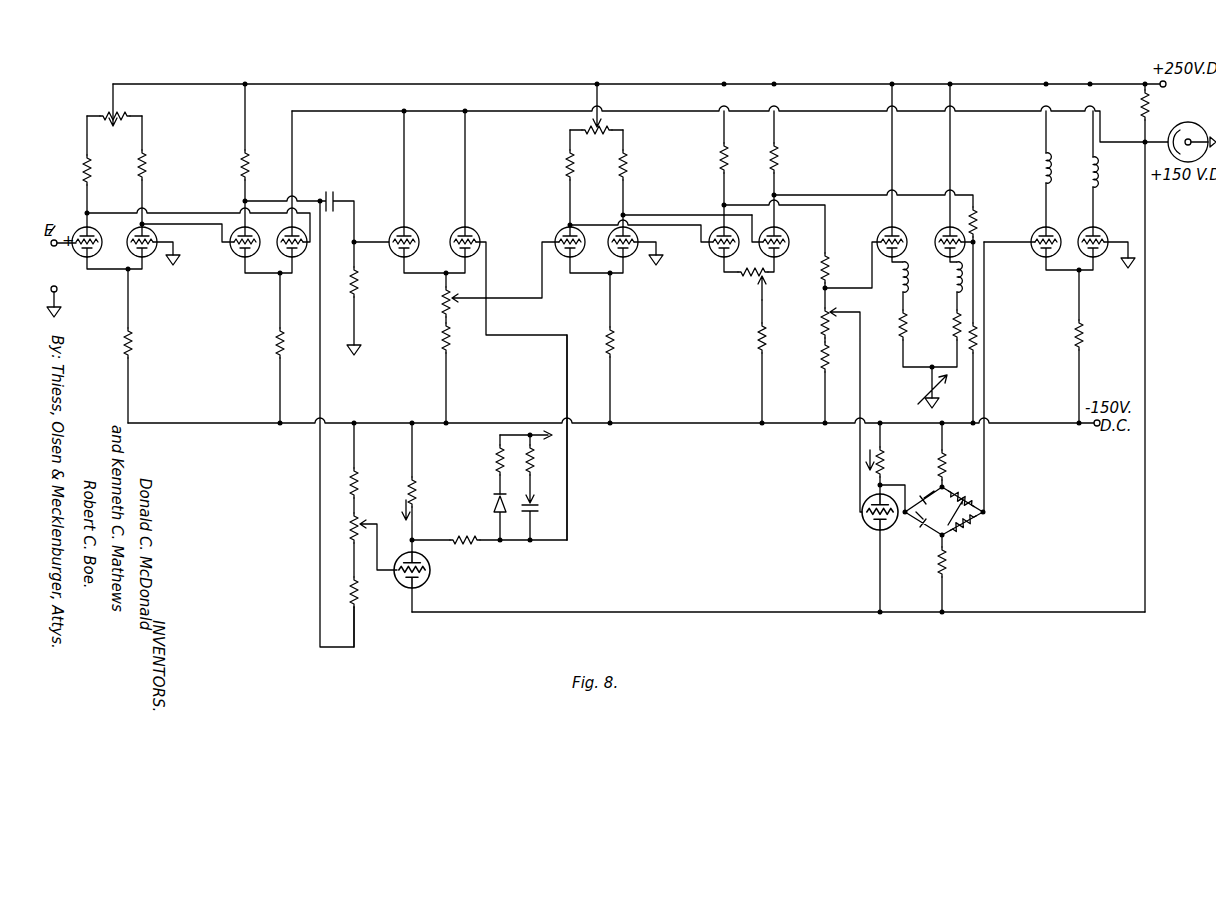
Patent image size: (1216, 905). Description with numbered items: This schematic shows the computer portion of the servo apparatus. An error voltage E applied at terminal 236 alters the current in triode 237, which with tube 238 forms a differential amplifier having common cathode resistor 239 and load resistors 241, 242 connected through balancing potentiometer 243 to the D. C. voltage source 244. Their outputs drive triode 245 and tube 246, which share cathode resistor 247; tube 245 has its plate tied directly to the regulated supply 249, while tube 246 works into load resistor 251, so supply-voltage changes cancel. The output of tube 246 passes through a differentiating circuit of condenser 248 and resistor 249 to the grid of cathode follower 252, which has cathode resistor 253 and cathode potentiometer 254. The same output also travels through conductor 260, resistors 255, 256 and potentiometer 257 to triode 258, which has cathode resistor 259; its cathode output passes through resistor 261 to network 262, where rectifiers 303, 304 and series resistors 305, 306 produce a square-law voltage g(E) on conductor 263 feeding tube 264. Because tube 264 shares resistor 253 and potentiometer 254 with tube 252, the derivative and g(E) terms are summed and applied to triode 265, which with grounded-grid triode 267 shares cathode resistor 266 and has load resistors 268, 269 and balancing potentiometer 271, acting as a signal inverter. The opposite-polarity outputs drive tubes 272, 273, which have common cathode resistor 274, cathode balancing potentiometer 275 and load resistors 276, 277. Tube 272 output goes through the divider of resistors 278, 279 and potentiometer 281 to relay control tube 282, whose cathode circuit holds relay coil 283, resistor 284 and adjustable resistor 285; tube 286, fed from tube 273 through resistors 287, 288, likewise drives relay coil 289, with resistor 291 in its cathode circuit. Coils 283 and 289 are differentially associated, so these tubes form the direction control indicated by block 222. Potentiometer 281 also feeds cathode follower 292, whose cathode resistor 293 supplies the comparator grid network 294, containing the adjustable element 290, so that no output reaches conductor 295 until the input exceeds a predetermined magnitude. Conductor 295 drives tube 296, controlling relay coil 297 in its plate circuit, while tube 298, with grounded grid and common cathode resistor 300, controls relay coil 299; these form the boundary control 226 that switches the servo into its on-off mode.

The block 222 is at (912, 173).
The boundary control 226 is at (1060, 230).
The terminal 236 is at (69, 213).
The triode 237 is at (80, 268).
The tube 238 is at (170, 237).
The common cathode resistor 239 is at (132, 341).
The load resistor 241 is at (88, 159).
The load resistor 242 is at (145, 159).
The potentiometer 243 is at (131, 113).
The source of D. C. voltage 244 is at (1150, 107).
The second triode 245 is at (305, 260).
The tube 246 is at (232, 264).
The common cathode resistor 247 is at (276, 341).
The condenser 248 is at (338, 212).
The regulated 150-volt D. C. supply 249 is at (364, 294).
The load resistor 251 is at (247, 159).
The tube 252 is at (412, 225).
The cathode resistor 253 is at (442, 338).
The cathode potentiometer 254 is at (440, 301).
The resistor 255 is at (358, 482).
The resistor 256 is at (357, 592).
The potentiometer 257 is at (364, 526).
The triode 258 is at (424, 572).
The cathode resistor 259 is at (417, 488).
The conductor 260 is at (323, 398).
The resistor 261 is at (462, 544).
The network 262 is at (512, 485).
The conductor 263 is at (569, 498).
The tube 264 is at (474, 223).
The triode 265 is at (562, 264).
The cathode resistor 266 is at (618, 334).
The second triode 267 is at (636, 235).
The load resistor 268 is at (574, 166).
The load resistor 269 is at (626, 166).
The balancing potentiometer 271 is at (600, 130).
The tube 272 is at (714, 255).
The tube 273 is at (782, 230).
The common cathode resistor 274 is at (767, 320).
The cathode balancing potentiometer 275 is at (754, 280).
The load resistor 276 is at (727, 156).
The load resistor 277 is at (777, 156).
The resistor 278 is at (827, 252).
The resistor 279 is at (820, 362).
The potentiometer 281 is at (822, 324).
The relay control tube 282 is at (886, 227).
The relay coil 283 is at (912, 284).
The resistor 284 is at (906, 321).
The adjustable resistor 285 is at (943, 387).
The tube 286 is at (946, 228).
The resistor 287 is at (976, 214).
The resistor 288 is at (980, 338).
The relay coil 289 is at (955, 276).
The photocell bridge arm 290 is at (912, 537).
The resistor 291 is at (952, 332).
The tube 292 is at (866, 530).
The cathode resistor 293 is at (884, 462).
The grid network circuit 294 is at (944, 517).
The conductor 295 is at (988, 394).
The tube 296 is at (1036, 262).
The relay coil 297 is at (1052, 168).
The tube 298 is at (1107, 227).
The relay coil 299 is at (1100, 176).
The common cathode resistor 300 is at (1082, 322).
The semiconductor type rectifier 303 is at (494, 504).
The semiconductor rectifier 304 is at (541, 500).
The series resistor 305 is at (496, 455).
The series resistor 306 is at (530, 464).